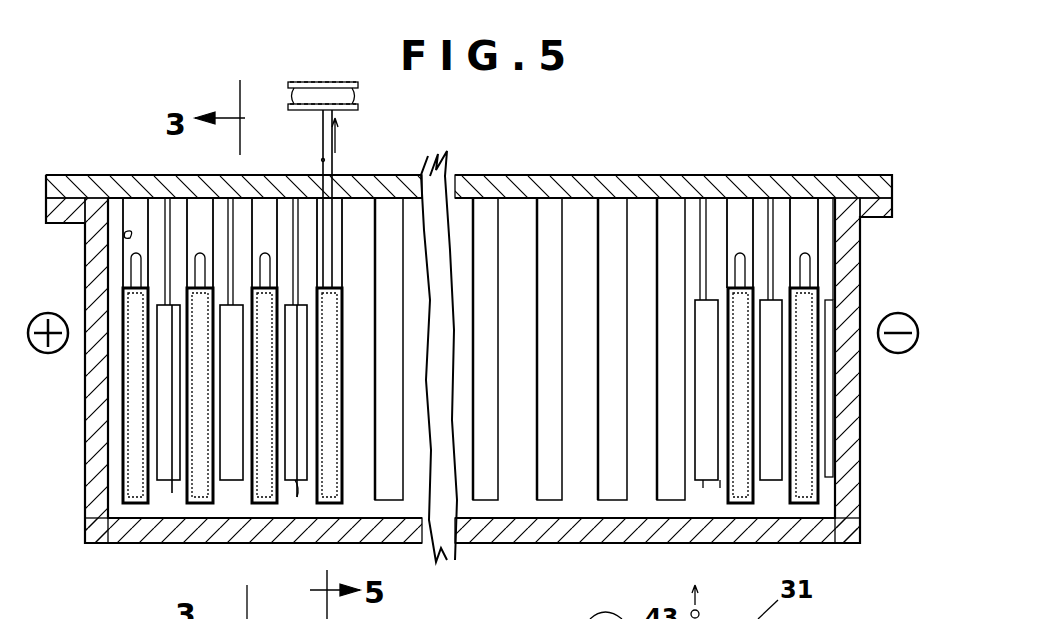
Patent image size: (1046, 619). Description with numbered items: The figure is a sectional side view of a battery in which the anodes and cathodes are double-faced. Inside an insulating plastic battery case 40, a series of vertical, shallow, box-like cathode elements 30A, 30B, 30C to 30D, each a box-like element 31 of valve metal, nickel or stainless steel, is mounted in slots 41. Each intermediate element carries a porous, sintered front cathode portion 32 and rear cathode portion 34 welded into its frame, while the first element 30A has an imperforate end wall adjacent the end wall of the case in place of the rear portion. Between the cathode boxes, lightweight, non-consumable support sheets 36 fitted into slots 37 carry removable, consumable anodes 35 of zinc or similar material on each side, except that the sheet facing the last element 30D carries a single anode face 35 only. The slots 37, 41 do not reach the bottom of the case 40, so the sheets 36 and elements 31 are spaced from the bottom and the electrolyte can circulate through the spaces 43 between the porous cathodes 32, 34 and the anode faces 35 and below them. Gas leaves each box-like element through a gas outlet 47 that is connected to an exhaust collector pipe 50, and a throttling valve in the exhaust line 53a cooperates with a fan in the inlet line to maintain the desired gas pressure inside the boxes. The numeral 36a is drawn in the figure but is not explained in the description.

The first cathode element 30A is at (120, 386).
The intermediate cathode element 30B is at (203, 510).
The intermediate cathode element 30C is at (265, 510).
The last cathode element 30D is at (808, 506).
The box-like element 31 is at (118, 483).
The front cathode portion 32 is at (160, 482).
The rear cathode portion 34 is at (172, 493).
The consumable anode 35 is at (158, 325).
The support sheet 36 is at (705, 291).
The slot 37 is at (705, 237).
The battery case 40 is at (82, 354).
The slot 41 is at (128, 238).
The electrolyte space 43 is at (290, 490).
The gas outlet 47 is at (334, 160).
The exhaust collector pipe 50 is at (320, 82).
The separator portion 36a is at (740, 608).
The exhaust line 53a is at (390, 611).